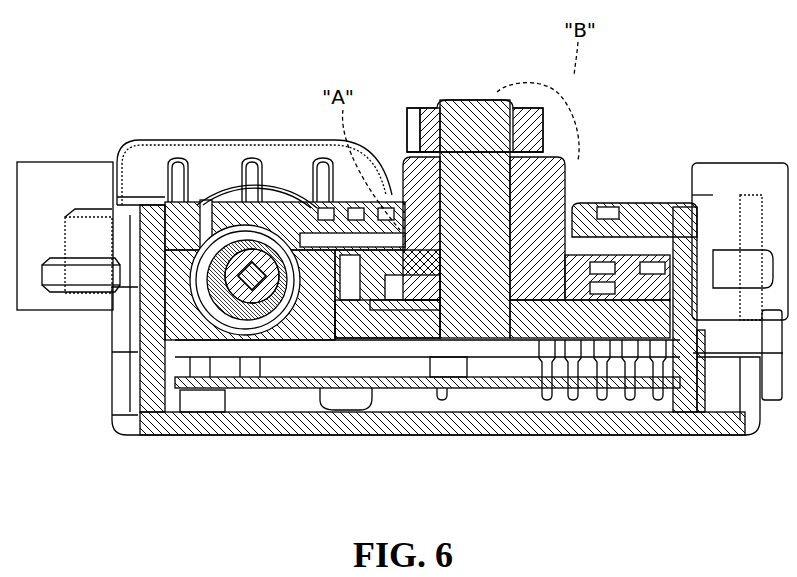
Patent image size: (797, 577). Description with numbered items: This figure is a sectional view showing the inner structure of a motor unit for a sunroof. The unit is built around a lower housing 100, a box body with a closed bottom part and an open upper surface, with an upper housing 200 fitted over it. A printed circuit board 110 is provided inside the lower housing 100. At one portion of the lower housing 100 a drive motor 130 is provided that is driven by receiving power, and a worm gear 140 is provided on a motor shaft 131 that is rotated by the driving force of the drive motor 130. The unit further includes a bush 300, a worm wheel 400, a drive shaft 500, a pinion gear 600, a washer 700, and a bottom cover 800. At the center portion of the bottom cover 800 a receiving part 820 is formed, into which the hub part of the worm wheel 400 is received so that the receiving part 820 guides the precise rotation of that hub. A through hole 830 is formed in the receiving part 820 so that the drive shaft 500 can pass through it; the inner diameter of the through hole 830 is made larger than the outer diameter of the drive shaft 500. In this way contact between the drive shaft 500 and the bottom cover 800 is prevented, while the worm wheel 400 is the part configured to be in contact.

The lower housing 100 is at (300, 436).
The printed circuit board 110 is at (510, 414).
The drive motor 130 is at (192, 138).
The motor shaft 131 is at (228, 283).
The worm gear 140 is at (203, 297).
The upper housing 200 is at (666, 196).
The bush 300 is at (540, 210).
The worm wheel 400 is at (625, 208).
The drive shaft 500 is at (470, 102).
The pinion gear 600 is at (432, 108).
The washer 700 is at (403, 162).
The bottom cover 800 is at (650, 402).
The receiving part 820 is at (582, 390).
The through hole 830 is at (438, 400).